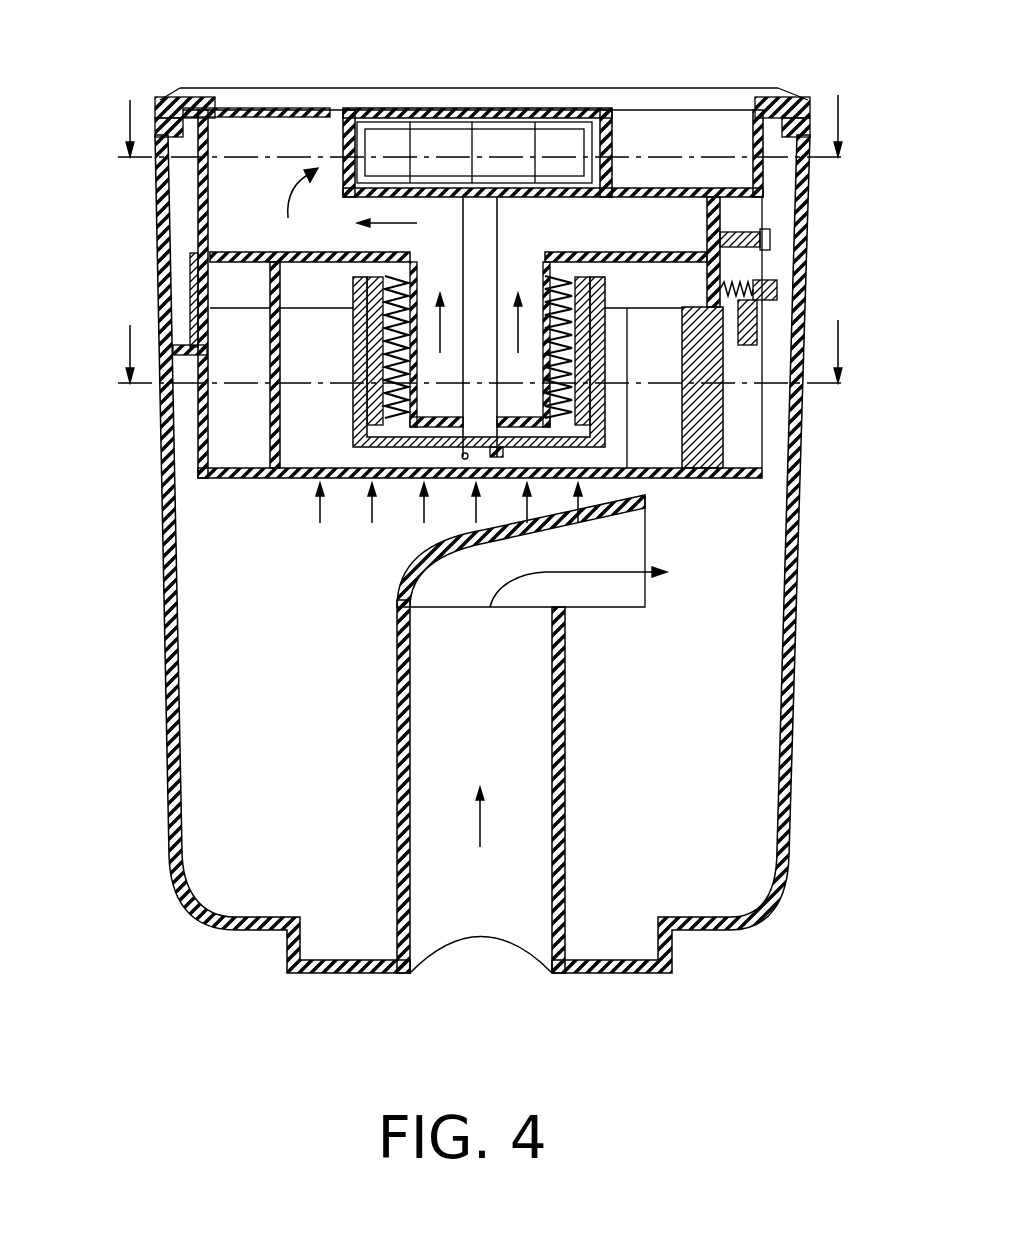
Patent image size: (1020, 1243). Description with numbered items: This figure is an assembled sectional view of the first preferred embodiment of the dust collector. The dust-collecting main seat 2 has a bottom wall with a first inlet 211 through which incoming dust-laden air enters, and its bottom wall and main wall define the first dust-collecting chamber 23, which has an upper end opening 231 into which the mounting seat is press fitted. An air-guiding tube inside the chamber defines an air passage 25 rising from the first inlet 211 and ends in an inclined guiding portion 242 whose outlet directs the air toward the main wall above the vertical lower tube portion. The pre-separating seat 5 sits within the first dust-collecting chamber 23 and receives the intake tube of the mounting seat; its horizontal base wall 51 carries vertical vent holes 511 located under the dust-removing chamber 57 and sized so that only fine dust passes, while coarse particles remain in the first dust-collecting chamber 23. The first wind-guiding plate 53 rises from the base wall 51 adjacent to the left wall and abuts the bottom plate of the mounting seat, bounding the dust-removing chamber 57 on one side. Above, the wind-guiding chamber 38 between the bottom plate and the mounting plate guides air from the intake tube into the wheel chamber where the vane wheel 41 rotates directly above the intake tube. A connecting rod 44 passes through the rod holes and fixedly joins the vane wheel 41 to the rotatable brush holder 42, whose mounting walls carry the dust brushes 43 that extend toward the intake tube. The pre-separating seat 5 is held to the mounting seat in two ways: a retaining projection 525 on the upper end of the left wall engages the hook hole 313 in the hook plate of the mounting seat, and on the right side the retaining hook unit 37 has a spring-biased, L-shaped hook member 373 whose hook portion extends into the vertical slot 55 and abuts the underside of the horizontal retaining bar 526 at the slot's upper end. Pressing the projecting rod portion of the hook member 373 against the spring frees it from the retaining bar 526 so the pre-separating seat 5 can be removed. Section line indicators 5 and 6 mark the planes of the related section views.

The dust-collecting main seat 2 is at (797, 598).
The first dust-collecting chamber 23 is at (243, 655).
The air passage 25 is at (523, 792).
The first inlet 211 is at (482, 940).
The inclined guiding portion 242 is at (623, 520).
The base wall 51 is at (302, 478).
The vertical vent holes 511 is at (358, 480).
The first wind-guiding plate 53 is at (275, 392).
The vertical slot 55 is at (747, 448).
The dust-removing chamber 57 is at (312, 410).
The rotatable brush holder 42 is at (605, 402).
The dust brushes 43 is at (393, 278).
The connecting rod 44 is at (503, 225).
The vane wheel 41 is at (443, 123).
The wind-guiding chamber 38 is at (232, 181).
The upper end opening 231 is at (783, 147).
The retaining hook unit 37 is at (757, 285).
The horizontal retaining bar 526 is at (775, 303).
The hook member 373 is at (757, 338).
The retaining projection 525 is at (192, 330).
The hook hole 313 is at (192, 343).
The pre-separating seat 5 is at (482, 122).
The section line 6- 6 is at (482, 351).